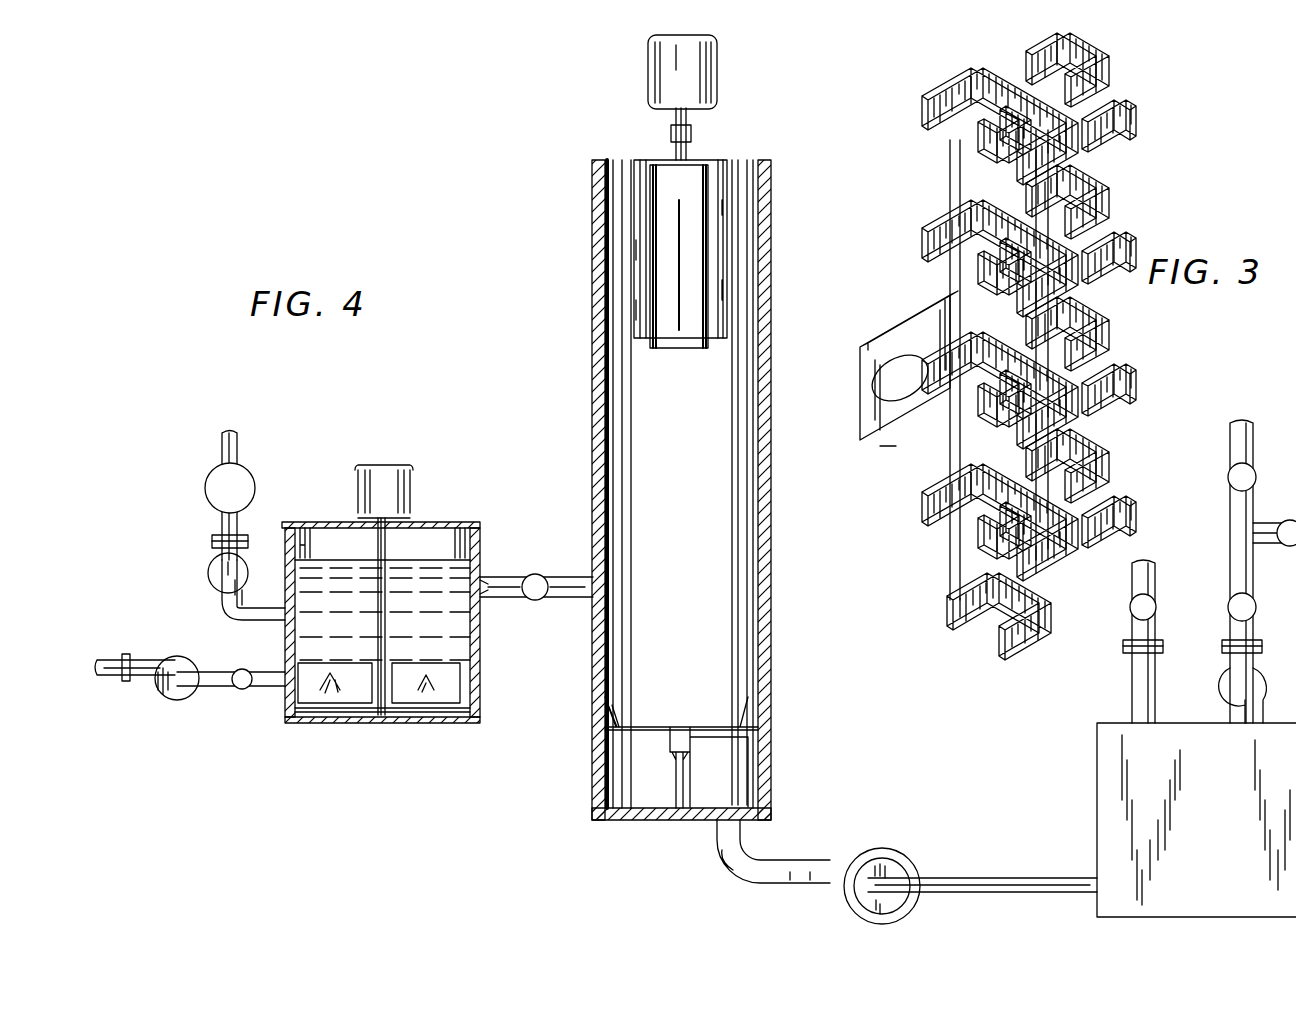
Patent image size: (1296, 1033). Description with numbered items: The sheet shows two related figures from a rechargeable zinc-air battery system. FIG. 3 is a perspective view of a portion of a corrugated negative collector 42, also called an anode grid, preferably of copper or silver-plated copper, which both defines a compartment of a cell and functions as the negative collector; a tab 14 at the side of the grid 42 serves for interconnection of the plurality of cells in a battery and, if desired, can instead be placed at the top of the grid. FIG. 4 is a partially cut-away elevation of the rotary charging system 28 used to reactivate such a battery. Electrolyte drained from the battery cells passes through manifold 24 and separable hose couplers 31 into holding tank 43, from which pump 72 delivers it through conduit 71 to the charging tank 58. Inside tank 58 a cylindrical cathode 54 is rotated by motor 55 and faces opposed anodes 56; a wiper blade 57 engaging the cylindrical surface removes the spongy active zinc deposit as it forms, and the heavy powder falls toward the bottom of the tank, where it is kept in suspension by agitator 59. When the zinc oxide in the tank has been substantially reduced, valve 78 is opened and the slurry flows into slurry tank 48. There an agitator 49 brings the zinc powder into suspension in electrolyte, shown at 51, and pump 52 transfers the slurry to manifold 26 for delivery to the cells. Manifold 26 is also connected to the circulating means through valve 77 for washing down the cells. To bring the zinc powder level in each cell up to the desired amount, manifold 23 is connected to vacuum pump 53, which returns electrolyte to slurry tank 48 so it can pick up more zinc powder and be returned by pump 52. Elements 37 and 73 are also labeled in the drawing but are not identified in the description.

In FIG. 3, the tab 14 is at (878, 345).
In FIG. 3, the negative collector 42 is at (1090, 168).
In FIG. 4, the manifold 23 is at (205, 487).
In FIG. 4, the manifold 24 is at (1157, 607).
In FIG. 4, the manifold 26 is at (1256, 475).
In FIG. 4, the charging system 28 is at (778, 496).
In FIG. 4, the separable hose couplers 31 is at (212, 540).
In FIG. 4, the inlet pipe 37 is at (1153, 572).
In FIG. 4, the holding tank 43 is at (1262, 683).
In FIG. 4, the slurry tank 48 is at (480, 538).
In FIG. 4, the agitator 49 is at (450, 692).
In FIG. 4, the zinc powder suspension 51 is at (318, 720).
In FIG. 4, the pump 52 is at (180, 700).
In FIG. 4, the vacuum pump 53 is at (214, 582).
In FIG. 4, the cathode 54 is at (658, 160).
In FIG. 4, the motor 55 is at (717, 80).
In FIG. 4, the anodes 56 is at (680, 350).
In FIG. 4, the wiper blade 57 is at (640, 283).
In FIG. 4, the tank 58 is at (770, 546).
In FIG. 4, the agitator 59 is at (612, 729).
In FIG. 4, the conduit 71 is at (1005, 880).
In FIG. 4, the pump 72 is at (906, 852).
In FIG. 4, the valve 73 is at (1288, 520).
In FIG. 4, the valve 77 is at (1256, 607).
In FIG. 4, the valve 78 is at (541, 568).